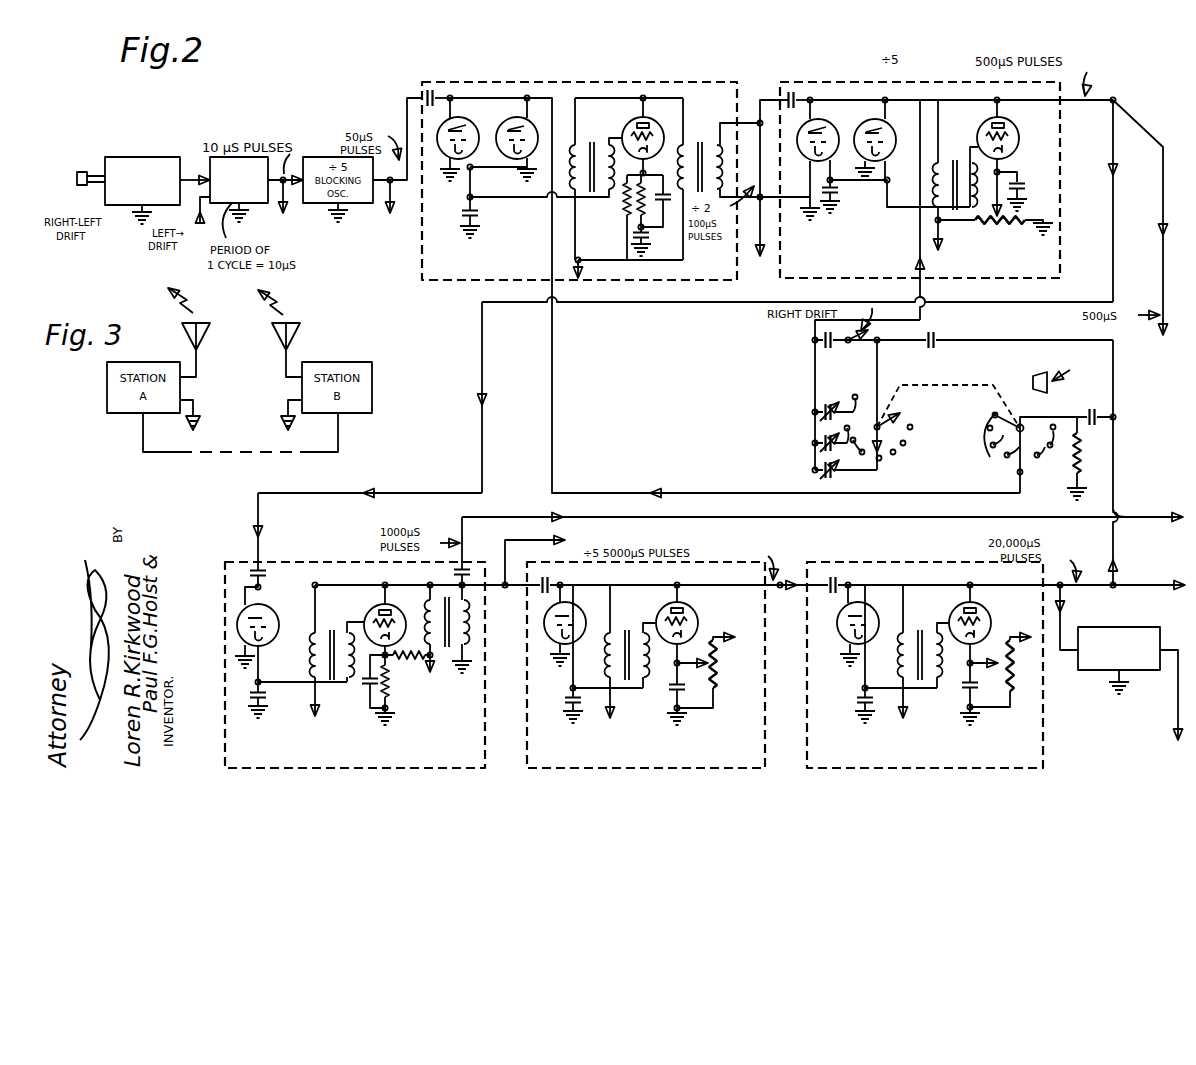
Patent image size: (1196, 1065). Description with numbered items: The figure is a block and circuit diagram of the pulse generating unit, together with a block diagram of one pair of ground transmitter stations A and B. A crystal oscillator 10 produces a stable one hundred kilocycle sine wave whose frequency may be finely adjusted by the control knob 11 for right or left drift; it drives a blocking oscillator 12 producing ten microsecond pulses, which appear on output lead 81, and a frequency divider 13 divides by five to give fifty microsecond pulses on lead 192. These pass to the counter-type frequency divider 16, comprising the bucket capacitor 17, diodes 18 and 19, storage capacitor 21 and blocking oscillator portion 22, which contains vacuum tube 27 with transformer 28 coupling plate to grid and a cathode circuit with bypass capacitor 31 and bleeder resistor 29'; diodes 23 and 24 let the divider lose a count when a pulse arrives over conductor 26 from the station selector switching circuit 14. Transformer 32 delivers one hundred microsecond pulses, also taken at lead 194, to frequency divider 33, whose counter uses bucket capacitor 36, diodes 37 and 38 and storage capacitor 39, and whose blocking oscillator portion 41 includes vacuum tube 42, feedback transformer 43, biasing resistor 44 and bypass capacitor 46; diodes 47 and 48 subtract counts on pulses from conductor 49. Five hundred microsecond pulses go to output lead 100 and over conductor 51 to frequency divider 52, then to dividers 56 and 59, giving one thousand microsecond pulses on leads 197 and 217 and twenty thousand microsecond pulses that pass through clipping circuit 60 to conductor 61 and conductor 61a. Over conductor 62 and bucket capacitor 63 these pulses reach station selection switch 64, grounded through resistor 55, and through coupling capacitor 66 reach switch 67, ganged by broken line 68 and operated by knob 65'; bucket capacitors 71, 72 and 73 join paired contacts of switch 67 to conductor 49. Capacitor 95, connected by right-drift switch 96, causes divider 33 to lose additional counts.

The crystal oscillator 10 is at (154, 157).
The control knob 11 is at (80, 170).
The blocking oscillator 12 is at (207, 157).
The frequency divider 13 is at (286, 209).
The station selector switching circuit 14 is at (927, 421).
The frequency divider 16 is at (505, 82).
The bucket capacitor 17 is at (422, 96).
The diode 18 is at (452, 145).
The diode 19 is at (466, 128).
The storage capacitor 21 is at (462, 214).
The blocking oscillator portion 22 is at (596, 179).
The diode 23 is at (506, 146).
The diode 24 is at (554, 132).
The conductor 26 is at (552, 377).
The vacuum tube 27 is at (630, 129).
The transformer 28 is at (576, 193).
The bleeder resistor 29' is at (611, 217).
The capacitor 31 is at (664, 202).
The transformer 32 is at (702, 142).
The frequency divider 33 is at (785, 92).
The bucket capacitor 36 is at (796, 93).
The diode 37 is at (810, 151).
The diode 38 is at (829, 139).
The storage capacitor 39 is at (835, 195).
The blocking oscillator portion 41 is at (956, 175).
The vacuum tube 42 is at (1010, 135).
The feedback transformer 43 is at (946, 223).
The biasing resistor 44 is at (1006, 224).
The bypass capacitor 46 is at (1018, 180).
The diode 47 is at (859, 163).
The diode 48 is at (883, 141).
The conductor 49 is at (919, 238).
The conductor 51 is at (626, 304).
The frequency divider 52 is at (242, 563).
The resistor 55 is at (1079, 455).
The frequency divider 56 is at (527, 651).
The frequency divider 59 is at (807, 643).
The clipping circuit 60 is at (1125, 627).
The conductor 61 is at (1186, 640).
The output conductor 61a is at (1155, 584).
The conductor 62 is at (1116, 510).
The bucket capacitor 63 is at (1111, 417).
The station selection switch 64 is at (1024, 442).
The knob 65' is at (1054, 390).
The coupling capacitor 66 is at (936, 344).
The station selection switch 67 is at (879, 428).
The broken line 68 is at (953, 386).
The bucket capacitor 71 is at (814, 467).
The bucket capacitor 72 is at (812, 439).
The bucket capacitor 73 is at (812, 408).
The output lead 81 is at (222, 203).
The capacitor 95 is at (813, 340).
The right-drift switch 96 is at (851, 346).
The output lead 100 is at (1162, 266).
The lead 192 is at (388, 212).
The output lead 194 is at (760, 262).
The output lead 197 is at (528, 517).
The output lead 217 is at (536, 540).